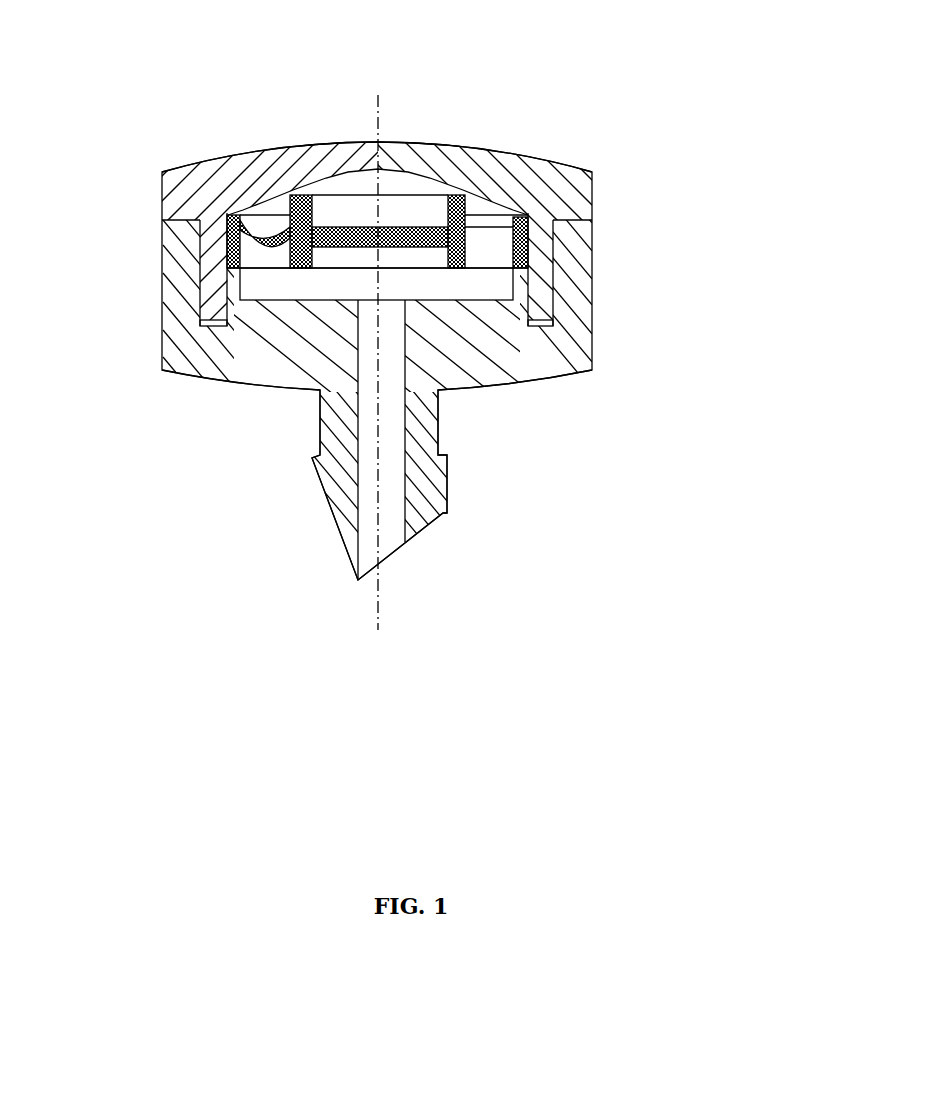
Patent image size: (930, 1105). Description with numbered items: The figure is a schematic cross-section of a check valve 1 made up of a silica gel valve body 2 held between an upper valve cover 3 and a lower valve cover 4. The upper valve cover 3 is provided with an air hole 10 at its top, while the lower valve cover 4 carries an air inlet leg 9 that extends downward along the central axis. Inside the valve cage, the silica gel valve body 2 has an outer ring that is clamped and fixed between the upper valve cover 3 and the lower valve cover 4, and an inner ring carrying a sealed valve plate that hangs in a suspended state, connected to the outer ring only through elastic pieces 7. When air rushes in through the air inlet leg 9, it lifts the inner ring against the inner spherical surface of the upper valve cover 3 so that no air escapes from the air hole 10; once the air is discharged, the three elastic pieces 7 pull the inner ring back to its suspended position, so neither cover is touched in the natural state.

The check valve 1 is at (625, 272).
The silica gel valve body 2 is at (520, 162).
The upper valve cover 3 is at (260, 160).
The lower valve cover 4 is at (488, 377).
The elastic pieces 7 is at (227, 252).
The air inlet leg 9 is at (390, 525).
The air hole 10 is at (408, 146).